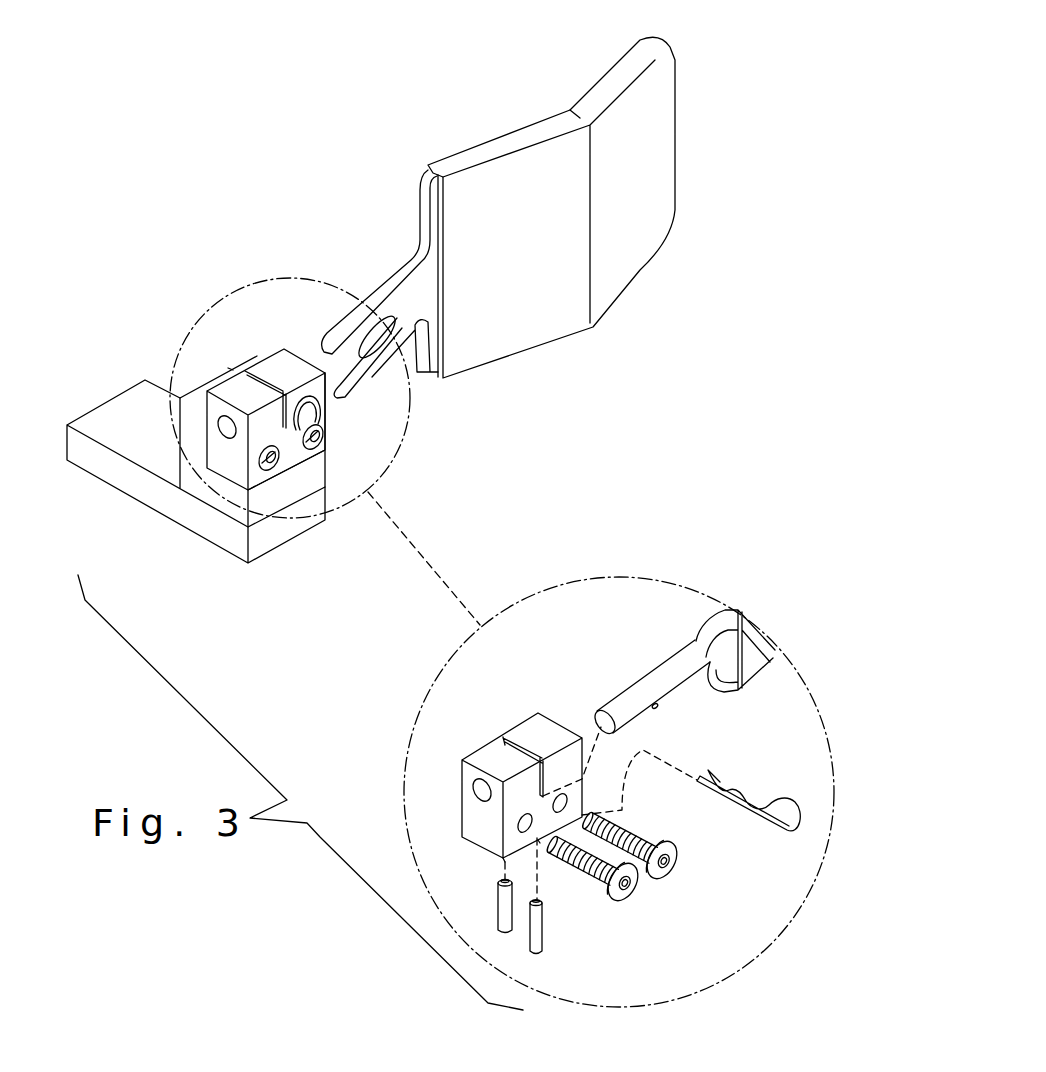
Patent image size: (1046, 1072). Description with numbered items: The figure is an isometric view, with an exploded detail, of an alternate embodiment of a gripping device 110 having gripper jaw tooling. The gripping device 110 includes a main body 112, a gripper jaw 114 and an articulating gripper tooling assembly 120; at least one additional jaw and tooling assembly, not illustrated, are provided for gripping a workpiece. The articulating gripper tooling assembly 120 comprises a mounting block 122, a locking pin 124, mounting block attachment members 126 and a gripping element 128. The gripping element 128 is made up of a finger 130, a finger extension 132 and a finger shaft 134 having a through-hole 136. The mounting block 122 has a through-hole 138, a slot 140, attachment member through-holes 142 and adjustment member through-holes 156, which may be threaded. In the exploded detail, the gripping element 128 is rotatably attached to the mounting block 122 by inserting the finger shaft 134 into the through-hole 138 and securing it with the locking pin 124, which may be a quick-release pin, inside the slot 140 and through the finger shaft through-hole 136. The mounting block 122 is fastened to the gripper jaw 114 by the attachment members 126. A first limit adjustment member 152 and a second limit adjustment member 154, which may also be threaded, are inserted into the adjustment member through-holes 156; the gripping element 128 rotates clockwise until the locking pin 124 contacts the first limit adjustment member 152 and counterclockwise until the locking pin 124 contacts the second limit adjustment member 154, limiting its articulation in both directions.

The gripping device 110 is at (222, 198).
The main body 112 is at (143, 493).
The gripper jaw 114 is at (223, 507).
The articulating gripper tooling assembly 120 is at (350, 245).
The mounting block 122 is at (478, 752).
The locking pin 124 is at (780, 797).
The mounting block attachment members 126 is at (667, 877).
The gripping element 128 is at (638, 133).
The finger 130 is at (643, 198).
The finger extension 132 is at (717, 622).
The finger shaft 134 is at (658, 677).
The finger shaft through-hole 136 is at (657, 707).
The through-hole 138 is at (480, 797).
The slot 140 is at (502, 737).
The attachment member through-holes 142 is at (565, 798).
The first limit adjustment member 152 is at (538, 937).
The second limit adjustment member 154 is at (503, 908).
The adjustment member through-holes 156 is at (502, 858).